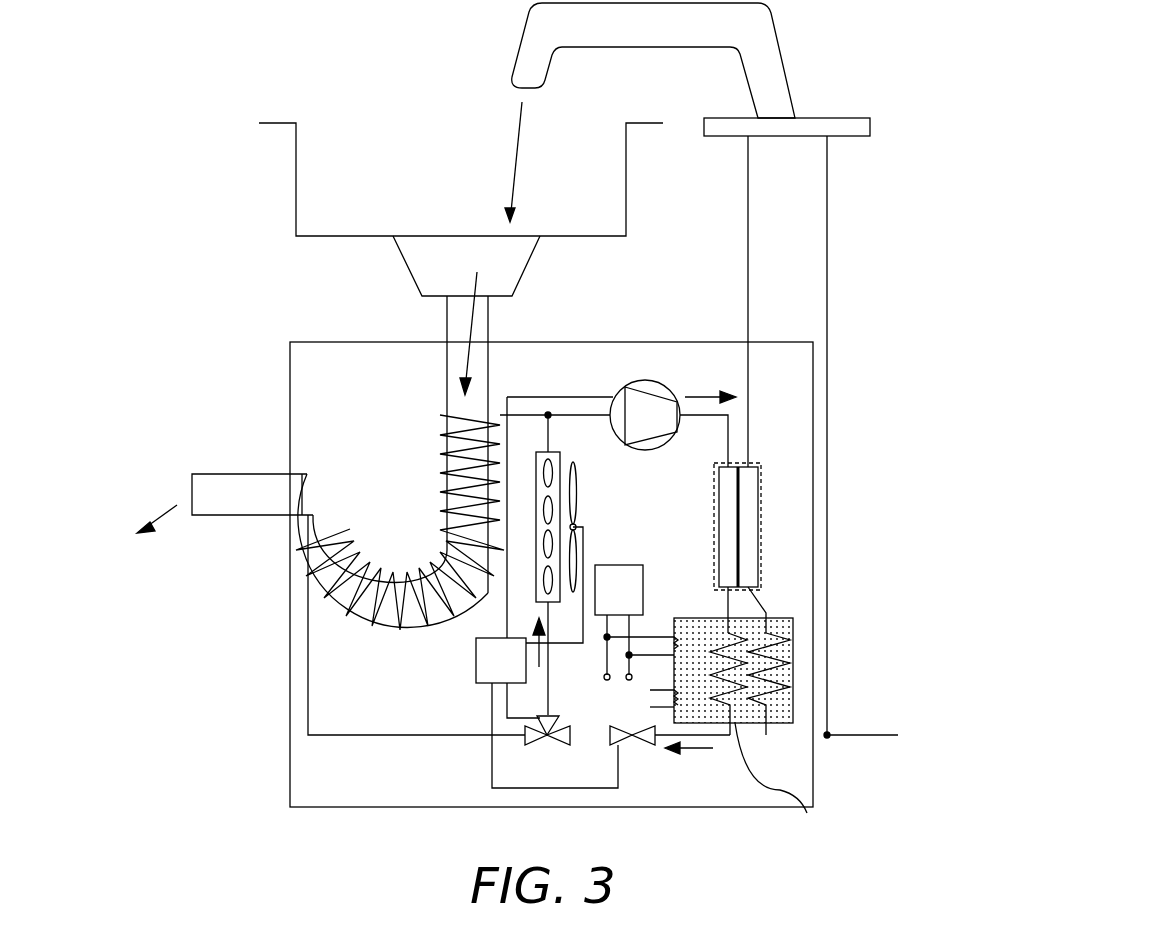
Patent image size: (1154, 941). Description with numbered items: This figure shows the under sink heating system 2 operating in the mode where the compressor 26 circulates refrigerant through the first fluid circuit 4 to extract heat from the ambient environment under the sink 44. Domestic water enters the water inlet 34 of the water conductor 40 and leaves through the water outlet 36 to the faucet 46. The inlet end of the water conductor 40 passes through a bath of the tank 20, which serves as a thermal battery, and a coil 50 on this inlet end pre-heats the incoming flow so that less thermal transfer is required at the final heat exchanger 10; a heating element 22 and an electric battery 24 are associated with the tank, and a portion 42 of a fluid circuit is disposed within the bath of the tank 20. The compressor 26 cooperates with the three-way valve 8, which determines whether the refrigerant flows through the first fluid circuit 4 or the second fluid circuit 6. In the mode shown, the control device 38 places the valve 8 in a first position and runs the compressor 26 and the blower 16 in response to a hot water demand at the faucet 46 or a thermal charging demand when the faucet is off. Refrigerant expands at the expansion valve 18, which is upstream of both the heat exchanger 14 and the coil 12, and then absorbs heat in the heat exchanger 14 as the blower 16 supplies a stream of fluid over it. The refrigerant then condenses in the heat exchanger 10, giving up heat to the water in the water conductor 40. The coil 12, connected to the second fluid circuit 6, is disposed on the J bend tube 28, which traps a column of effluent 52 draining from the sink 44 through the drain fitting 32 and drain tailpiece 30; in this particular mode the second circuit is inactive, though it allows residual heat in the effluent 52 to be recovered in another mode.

The heating system 2 is at (712, 342).
The first fluid circuit 4 is at (553, 664).
The second fluid circuit 6 is at (380, 735).
The 3-way valve 8 is at (560, 745).
The final heat exchanger 10 is at (714, 580).
The coil 12 is at (444, 474).
The heat exchanger 14 is at (550, 452).
The blower 16 is at (578, 478).
The expansion valve 18 is at (642, 745).
The tank 20 is at (732, 725).
The heating element 22 is at (674, 658).
The electric battery 24 is at (619, 622).
The compressor 26 is at (629, 385).
The J bend tube 28 is at (398, 577).
The drain tailpiece 30 is at (443, 303).
The drain fitting 32 is at (528, 263).
The water inlet 34 is at (887, 735).
The water outlet 36 is at (748, 172).
The control device 38 is at (547, 713).
The water conductor 40 is at (762, 595).
The portion of fluid circuit within bath of tank 42 is at (779, 785).
The sink 44 is at (626, 190).
The faucet 46 is at (773, 42).
The coil 50 is at (793, 648).
The effluent 52 is at (175, 505).